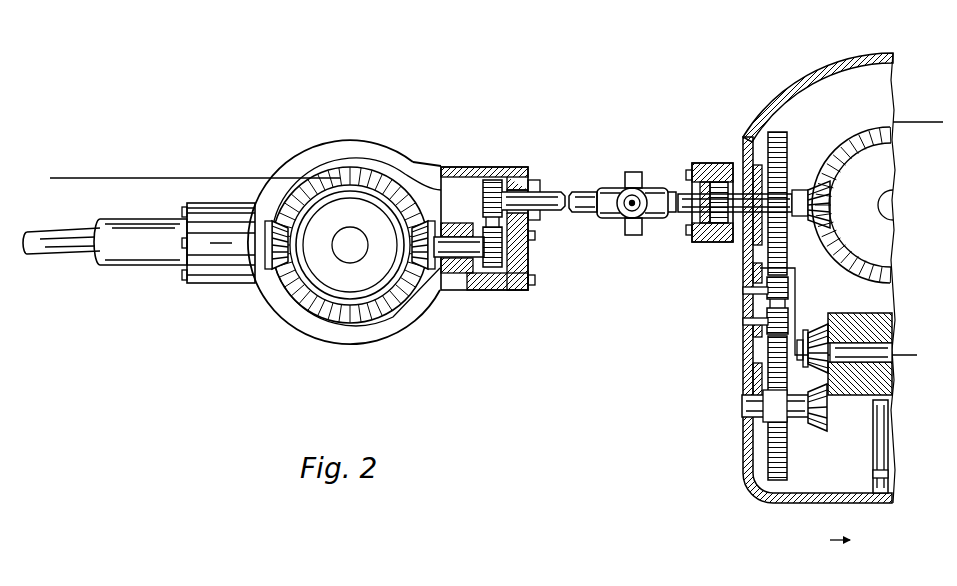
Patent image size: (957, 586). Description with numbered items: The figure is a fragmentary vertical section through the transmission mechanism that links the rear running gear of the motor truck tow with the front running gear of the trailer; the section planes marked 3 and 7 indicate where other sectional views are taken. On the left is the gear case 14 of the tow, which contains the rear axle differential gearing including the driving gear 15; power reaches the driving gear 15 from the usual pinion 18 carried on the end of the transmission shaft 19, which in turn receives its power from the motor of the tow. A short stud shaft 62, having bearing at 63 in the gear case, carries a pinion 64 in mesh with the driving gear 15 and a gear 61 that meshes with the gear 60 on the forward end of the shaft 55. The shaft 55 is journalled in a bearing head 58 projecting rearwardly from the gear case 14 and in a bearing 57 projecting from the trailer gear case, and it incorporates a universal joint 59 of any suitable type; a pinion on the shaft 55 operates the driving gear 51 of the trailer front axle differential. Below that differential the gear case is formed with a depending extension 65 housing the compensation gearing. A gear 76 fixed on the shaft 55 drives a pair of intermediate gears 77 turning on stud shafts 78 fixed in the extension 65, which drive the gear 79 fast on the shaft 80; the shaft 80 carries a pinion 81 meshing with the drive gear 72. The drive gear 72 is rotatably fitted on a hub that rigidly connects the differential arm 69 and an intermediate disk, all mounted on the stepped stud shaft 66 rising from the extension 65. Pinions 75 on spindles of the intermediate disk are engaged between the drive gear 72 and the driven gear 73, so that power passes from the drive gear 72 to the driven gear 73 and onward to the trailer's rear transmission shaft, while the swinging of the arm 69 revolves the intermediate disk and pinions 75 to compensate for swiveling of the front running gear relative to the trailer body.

The section line 3- 3 is at (62, 176).
The section line 7- 7 is at (675, 188).
The gear case 14 is at (285, 326).
The driving gear 15 is at (340, 172).
The pinion 18 is at (270, 275).
The transmission shaft 19 is at (73, 257).
The driving gear 51 is at (870, 243).
The shaft 55 is at (684, 221).
The bearing 57 is at (713, 182).
The bearing head 58 is at (533, 171).
The universal joint 59 is at (638, 172).
The gear 60 is at (495, 181).
The gear 61 is at (527, 270).
The short stud shaft 62 is at (458, 238).
The bearing 63 is at (455, 262).
The pinion 64 is at (438, 266).
The depending extension 65 is at (828, 503).
The stud shaft 66 is at (869, 492).
The differential arm 69 is at (887, 427).
The drive gear 72 is at (892, 388).
The driven gear 73 is at (892, 317).
The pinions 75 is at (806, 365).
The gear 76 is at (787, 140).
The intermediate gears 77 is at (788, 317).
The stud shafts 78 is at (740, 320).
The gear 79 is at (775, 455).
The shaft 80 is at (755, 401).
The pinion 81 is at (815, 433).